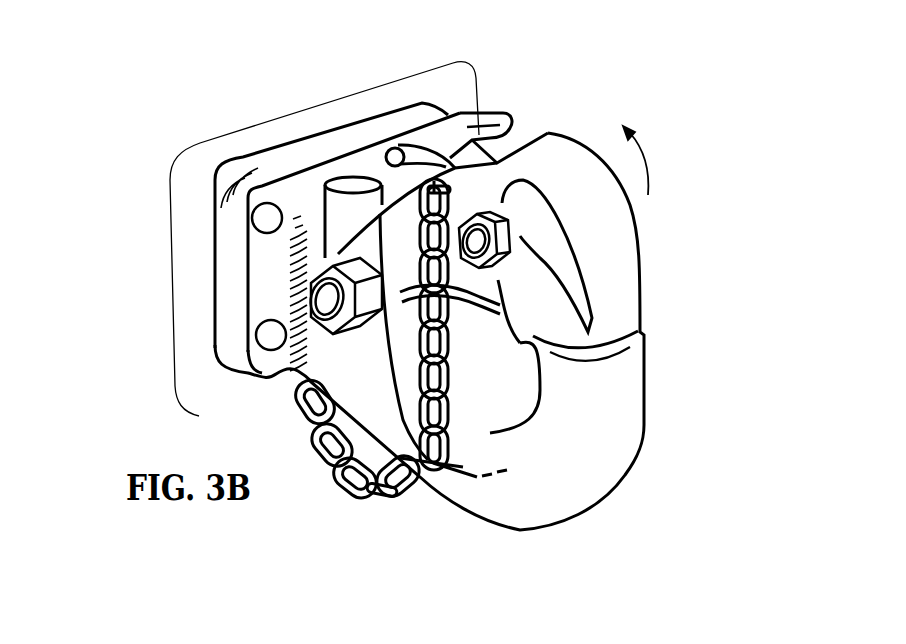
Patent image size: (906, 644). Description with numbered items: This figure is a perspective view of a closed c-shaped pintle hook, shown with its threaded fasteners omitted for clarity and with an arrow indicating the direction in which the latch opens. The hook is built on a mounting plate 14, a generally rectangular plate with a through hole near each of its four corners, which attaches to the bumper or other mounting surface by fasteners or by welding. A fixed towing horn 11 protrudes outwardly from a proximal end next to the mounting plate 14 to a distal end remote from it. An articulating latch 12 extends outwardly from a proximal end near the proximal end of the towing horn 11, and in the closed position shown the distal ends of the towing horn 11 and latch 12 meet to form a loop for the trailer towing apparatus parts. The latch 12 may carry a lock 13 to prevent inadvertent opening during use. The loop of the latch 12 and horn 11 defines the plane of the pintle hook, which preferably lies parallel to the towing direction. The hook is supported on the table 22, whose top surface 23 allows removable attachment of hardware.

The towing horn 11 is at (478, 447).
The articulating latch 12 is at (613, 236).
The lock 13 is at (470, 138).
The mounting plate 14 is at (292, 197).
The table 22 is at (196, 312).
The top surface 23 is at (204, 251).